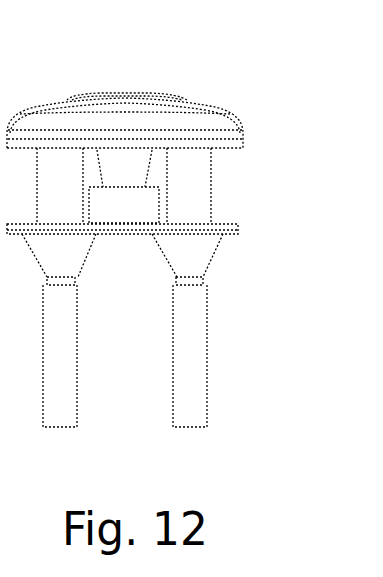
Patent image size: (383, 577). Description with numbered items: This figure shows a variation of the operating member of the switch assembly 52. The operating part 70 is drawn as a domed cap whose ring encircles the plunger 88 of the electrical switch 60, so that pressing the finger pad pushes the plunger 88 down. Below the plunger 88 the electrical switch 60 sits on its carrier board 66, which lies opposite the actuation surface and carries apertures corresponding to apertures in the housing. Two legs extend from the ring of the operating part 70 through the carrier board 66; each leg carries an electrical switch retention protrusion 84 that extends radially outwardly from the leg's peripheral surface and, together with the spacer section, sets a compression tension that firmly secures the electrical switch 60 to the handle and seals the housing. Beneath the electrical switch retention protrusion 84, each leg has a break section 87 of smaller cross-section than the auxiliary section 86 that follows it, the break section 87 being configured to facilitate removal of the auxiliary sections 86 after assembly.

The switch assembly 52 is at (225, 82).
The operating part 70 is at (242, 135).
The plunger 88 is at (135, 164).
The electrical switch 60 is at (132, 198).
The carrier board 66 is at (238, 229).
The electrical switch retention protrusion 84 is at (210, 260).
The break section 87 is at (203, 283).
The auxiliary section 86 is at (207, 345).